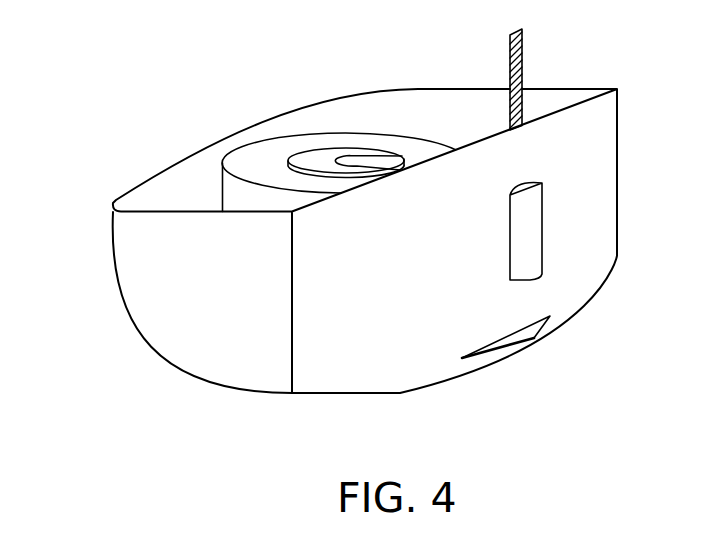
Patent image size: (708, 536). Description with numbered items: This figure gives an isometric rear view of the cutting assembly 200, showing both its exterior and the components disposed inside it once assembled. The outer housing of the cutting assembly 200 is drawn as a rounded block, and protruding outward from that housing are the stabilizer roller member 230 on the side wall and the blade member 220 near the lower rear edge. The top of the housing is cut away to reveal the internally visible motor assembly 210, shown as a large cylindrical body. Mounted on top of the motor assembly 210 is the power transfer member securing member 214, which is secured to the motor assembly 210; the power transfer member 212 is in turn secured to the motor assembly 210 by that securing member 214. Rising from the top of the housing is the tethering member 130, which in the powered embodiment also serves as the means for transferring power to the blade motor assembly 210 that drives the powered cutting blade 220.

The tethering member 130 is at (522, 50).
The cutting assembly 200 is at (163, 313).
The motor assembly 210 is at (233, 192).
The power transfer member 212 is at (352, 155).
The power transfer member securing member 214 is at (305, 160).
The cutting blade 220 is at (522, 337).
The stabilizer roller member 230 is at (535, 220).